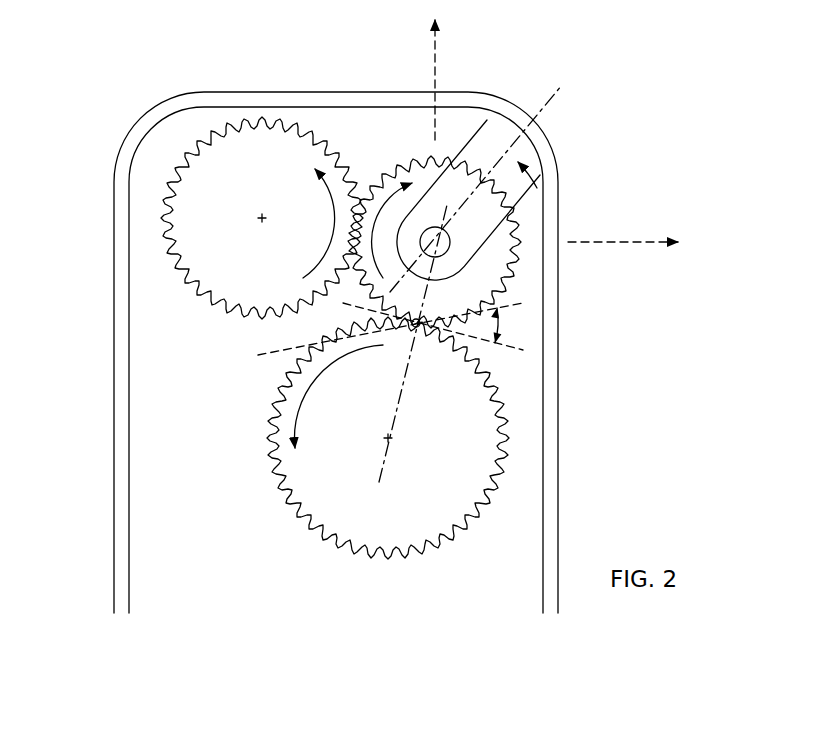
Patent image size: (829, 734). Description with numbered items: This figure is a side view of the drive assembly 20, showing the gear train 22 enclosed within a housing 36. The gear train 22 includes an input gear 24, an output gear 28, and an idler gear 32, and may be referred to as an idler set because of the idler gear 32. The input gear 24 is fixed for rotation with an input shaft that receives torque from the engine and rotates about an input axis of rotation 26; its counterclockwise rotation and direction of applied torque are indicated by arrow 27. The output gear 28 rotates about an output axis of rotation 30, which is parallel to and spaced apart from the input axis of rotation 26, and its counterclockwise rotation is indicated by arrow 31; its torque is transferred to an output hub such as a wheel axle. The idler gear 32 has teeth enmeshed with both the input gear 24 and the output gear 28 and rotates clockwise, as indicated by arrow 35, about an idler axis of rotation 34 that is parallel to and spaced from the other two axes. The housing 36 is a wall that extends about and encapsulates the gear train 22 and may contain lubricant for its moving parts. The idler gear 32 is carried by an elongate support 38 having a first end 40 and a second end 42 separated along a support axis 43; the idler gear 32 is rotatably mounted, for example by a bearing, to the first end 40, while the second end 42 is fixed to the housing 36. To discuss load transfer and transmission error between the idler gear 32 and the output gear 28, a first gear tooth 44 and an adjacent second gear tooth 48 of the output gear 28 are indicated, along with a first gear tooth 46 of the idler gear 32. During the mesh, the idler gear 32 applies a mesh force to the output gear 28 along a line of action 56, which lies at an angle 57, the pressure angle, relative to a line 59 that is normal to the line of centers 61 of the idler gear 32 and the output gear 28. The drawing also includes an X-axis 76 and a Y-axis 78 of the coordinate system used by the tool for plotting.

The drive assembly 20 is at (126, 111).
The gear train 22 is at (249, 499).
The input gear 24 is at (223, 272).
The input axis of rotation 26 is at (261, 217).
The arrow 27 is at (317, 253).
The output gear 28 is at (355, 513).
The output axis of rotation 30 is at (389, 440).
The arrow 31 is at (328, 375).
The idler gear 32 is at (428, 153).
The idler axis of rotation 34 is at (436, 230).
The arrow 35 is at (374, 192).
The housing 36 is at (362, 95).
The support 38 is at (541, 178).
The first end 40 is at (465, 243).
The second end 42 is at (497, 132).
The support axis 43 is at (548, 103).
The first gear tooth 44 is at (430, 322).
The first gear tooth 46 is at (422, 328).
The second gear tooth 48 is at (440, 328).
The line of action 56 is at (517, 305).
The angle 57 is at (500, 326).
The line 59 is at (357, 307).
The line of centers 61 is at (384, 462).
The X-axis 76 is at (622, 242).
The Y-axis 78 is at (433, 62).